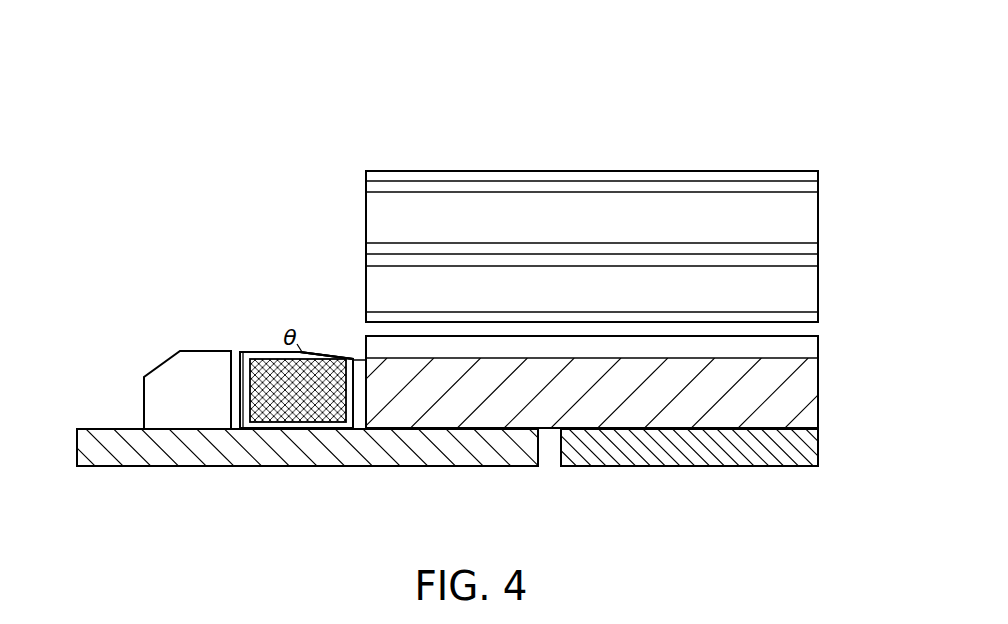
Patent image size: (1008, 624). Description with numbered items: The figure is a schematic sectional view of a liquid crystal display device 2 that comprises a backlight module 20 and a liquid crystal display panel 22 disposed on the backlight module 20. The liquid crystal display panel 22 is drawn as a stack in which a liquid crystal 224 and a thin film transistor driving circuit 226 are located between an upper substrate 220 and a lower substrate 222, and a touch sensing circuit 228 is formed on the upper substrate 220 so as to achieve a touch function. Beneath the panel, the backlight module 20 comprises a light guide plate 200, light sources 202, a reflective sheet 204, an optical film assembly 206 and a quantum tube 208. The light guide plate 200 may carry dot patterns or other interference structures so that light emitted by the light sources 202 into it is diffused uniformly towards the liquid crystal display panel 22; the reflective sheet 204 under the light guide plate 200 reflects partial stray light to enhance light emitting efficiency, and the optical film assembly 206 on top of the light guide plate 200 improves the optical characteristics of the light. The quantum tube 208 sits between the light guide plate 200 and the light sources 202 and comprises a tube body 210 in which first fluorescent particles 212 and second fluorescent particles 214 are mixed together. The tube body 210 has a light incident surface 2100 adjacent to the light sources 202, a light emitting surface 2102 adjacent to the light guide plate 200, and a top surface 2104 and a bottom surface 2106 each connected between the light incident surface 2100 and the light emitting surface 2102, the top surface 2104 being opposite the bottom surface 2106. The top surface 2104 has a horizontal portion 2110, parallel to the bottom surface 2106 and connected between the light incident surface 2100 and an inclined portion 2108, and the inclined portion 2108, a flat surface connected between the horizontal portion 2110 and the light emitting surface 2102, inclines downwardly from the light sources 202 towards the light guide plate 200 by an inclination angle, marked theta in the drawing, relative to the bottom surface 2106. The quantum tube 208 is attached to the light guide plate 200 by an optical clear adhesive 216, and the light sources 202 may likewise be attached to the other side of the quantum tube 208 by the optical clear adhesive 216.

The liquid crystal display device 2 is at (221, 73).
The backlight module 20 is at (835, 336).
The liquid crystal display panel 22 is at (835, 171).
The light guide plate 200 is at (511, 413).
The light sources 202 is at (157, 375).
The reflective sheet 204 is at (628, 453).
The optical film assembly 206 is at (778, 348).
The quantum tube 208 is at (336, 354).
The tube body 210 is at (241, 352).
The first fluorescent particles 212 is at (252, 430).
The second fluorescent particles 214 is at (310, 423).
The optical clear adhesive 216 is at (233, 352).
The upper substrate 220 is at (511, 230).
The lower substrate 222 is at (511, 300).
The liquid crystal 224 is at (730, 250).
The thin film transistor driving circuit 226 is at (775, 262).
The touch sensing circuit 228 is at (653, 185).
The light incident surface 2100 is at (240, 395).
The light emitting surface 2102 is at (355, 382).
The top surface 2104 is at (178, 253).
The bottom surface 2106 is at (285, 430).
The inclined portion 2108 is at (315, 352).
The horizontal portion 2110 is at (250, 352).